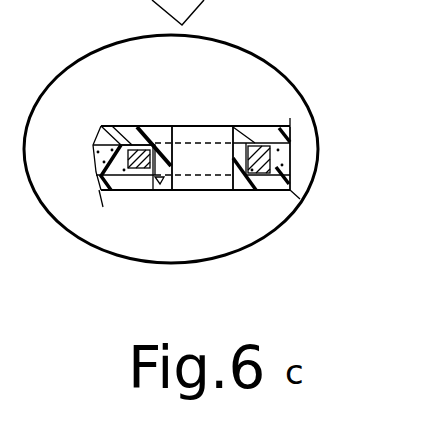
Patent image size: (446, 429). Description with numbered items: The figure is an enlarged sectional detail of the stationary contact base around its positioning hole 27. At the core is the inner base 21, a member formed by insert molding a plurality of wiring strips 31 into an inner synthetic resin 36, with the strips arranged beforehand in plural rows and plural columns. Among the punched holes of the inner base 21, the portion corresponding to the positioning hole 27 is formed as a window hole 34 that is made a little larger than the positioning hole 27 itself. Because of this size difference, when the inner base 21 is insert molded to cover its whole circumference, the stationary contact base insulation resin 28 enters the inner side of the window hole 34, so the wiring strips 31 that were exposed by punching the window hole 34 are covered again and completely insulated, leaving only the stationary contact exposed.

The inner base 21 is at (270, 142).
The positioning hole 27 is at (205, 133).
The stationary contact base insulation resin 28 is at (174, 160).
The wiring strip 31 is at (134, 127).
The window hole 34 is at (147, 195).
The inner synthetic resin 36 is at (95, 164).